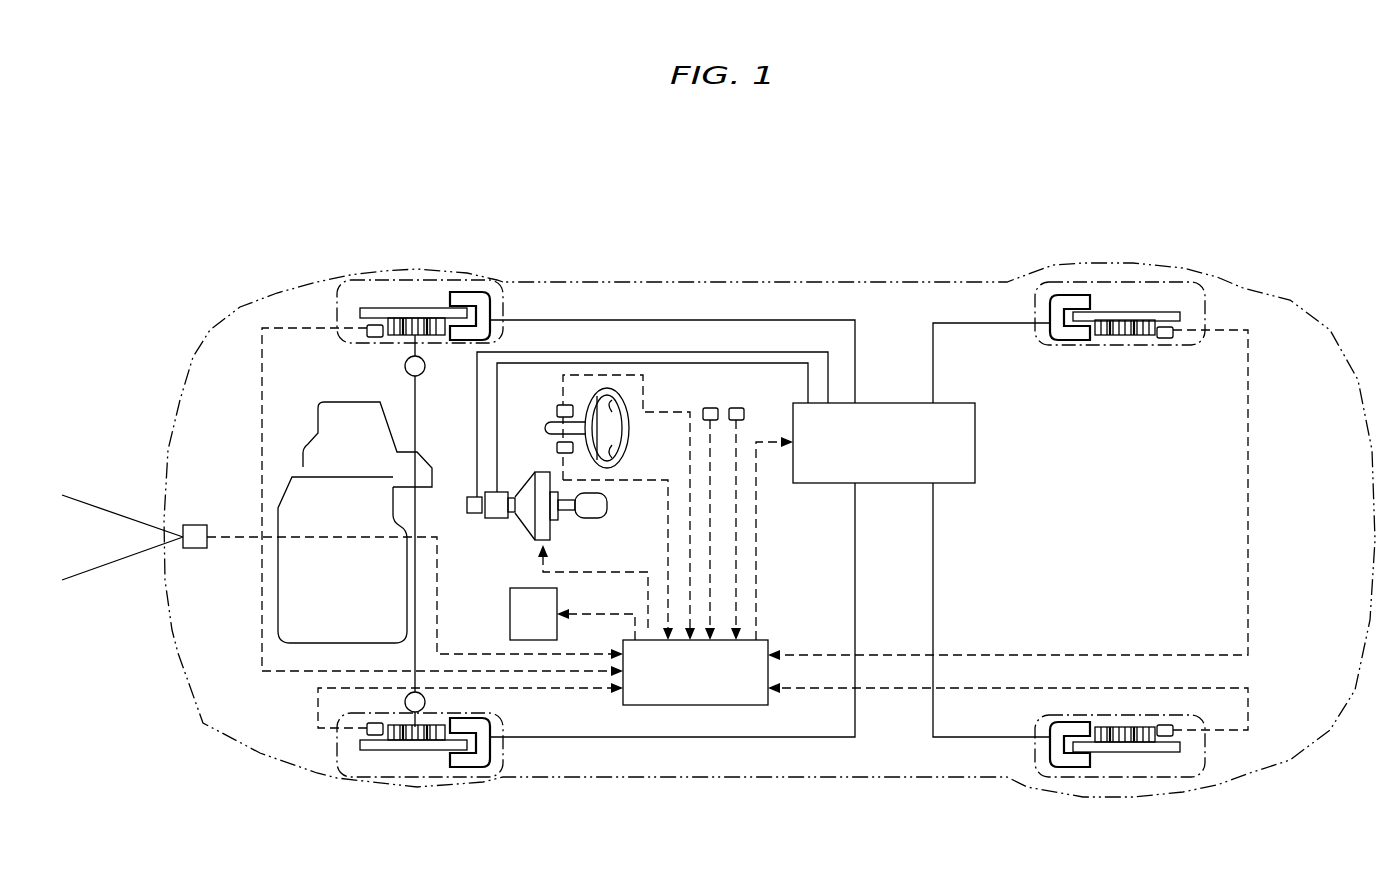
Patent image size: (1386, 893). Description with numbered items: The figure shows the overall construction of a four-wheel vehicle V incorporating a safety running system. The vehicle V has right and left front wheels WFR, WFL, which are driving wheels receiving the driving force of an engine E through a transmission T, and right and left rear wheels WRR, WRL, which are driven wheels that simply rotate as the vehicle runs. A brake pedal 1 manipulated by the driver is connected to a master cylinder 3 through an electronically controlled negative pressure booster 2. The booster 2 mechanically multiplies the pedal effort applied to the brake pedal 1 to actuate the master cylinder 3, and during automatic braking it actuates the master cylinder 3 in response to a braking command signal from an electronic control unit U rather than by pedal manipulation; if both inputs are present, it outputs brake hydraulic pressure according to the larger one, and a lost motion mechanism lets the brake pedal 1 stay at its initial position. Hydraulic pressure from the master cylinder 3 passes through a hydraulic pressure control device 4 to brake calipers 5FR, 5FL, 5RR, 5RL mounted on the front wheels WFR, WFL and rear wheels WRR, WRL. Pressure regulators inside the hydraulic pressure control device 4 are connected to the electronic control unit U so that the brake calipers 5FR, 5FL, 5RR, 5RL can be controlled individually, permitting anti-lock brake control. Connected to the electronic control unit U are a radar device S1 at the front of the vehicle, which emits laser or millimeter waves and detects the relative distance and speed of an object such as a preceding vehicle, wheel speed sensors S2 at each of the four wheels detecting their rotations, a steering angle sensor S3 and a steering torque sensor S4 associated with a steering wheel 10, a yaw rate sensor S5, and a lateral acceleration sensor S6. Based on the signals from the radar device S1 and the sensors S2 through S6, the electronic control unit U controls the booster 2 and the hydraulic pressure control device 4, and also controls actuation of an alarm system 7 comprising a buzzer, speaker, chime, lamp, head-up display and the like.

The four-wheel vehicle V is at (760, 237).
The right front wheel WFR is at (420, 282).
The left front wheel WFL is at (420, 777).
The right rear wheel WRR is at (1118, 282).
The left rear wheel WRL is at (1118, 777).
The brake caliper 5FR is at (486, 284).
The brake caliper 5FL is at (486, 776).
The brake caliper 5RR is at (1053, 284).
The brake caliper 5RL is at (1052, 776).
The radar device S1 is at (195, 549).
The wheel speed sensor S2 is at (1163, 808).
The steering angle sensor S3 is at (557, 447).
The steering torque sensor S4 is at (557, 411).
The yaw rate sensor S5 is at (706, 408).
The lateral acceleration sensor S6 is at (740, 408).
The brake pedal 1 is at (607, 506).
The electronically controlled negative pressure booster 2 is at (538, 546).
The master cylinder 3 is at (474, 514).
The hydraulic pressure control device 4 is at (893, 457).
The alarm system 7 is at (541, 626).
The steering wheel 10 is at (618, 430).
The transmission T is at (352, 448).
The engine E is at (351, 592).
The electronic control unit U is at (705, 686).